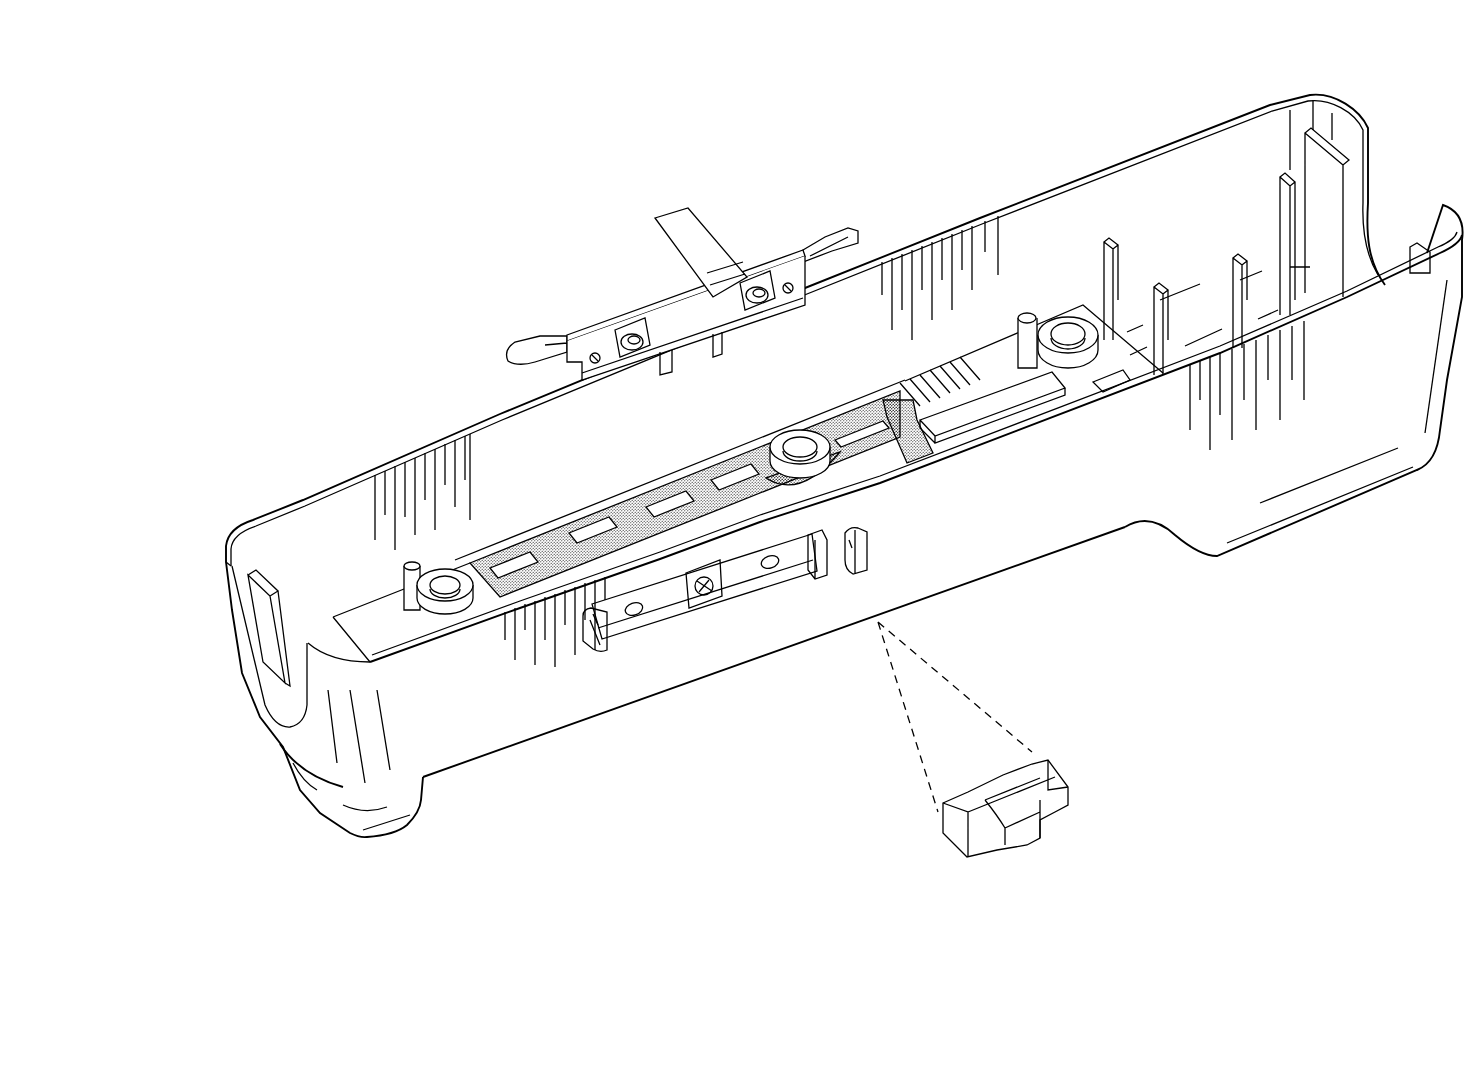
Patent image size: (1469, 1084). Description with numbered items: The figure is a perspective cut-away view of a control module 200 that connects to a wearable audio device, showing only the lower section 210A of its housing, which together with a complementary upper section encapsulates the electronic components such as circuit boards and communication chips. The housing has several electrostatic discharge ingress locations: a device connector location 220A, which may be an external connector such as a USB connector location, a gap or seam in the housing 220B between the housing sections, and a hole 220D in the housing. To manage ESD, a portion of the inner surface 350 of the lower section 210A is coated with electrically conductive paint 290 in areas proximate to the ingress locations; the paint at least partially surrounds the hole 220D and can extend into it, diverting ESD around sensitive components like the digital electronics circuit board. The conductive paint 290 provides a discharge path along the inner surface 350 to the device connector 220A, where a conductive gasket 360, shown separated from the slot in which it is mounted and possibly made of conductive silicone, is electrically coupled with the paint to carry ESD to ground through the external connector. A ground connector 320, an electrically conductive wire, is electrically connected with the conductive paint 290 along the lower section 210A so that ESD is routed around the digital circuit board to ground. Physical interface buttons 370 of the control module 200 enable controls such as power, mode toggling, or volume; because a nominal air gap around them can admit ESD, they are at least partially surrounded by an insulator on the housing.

The control module 200 is at (430, 170).
The lower section of the housing 210A is at (1017, 598).
The device connector location 220A is at (858, 650).
The gap in the housing 220B is at (377, 447).
The hole in the housing 220D is at (771, 578).
The electrically conductive paint 290 is at (886, 404).
The ground connector 320 is at (677, 190).
The inner surface of the housing 350 is at (1004, 320).
The conductive gasket 360 is at (938, 848).
The physical interface buttons 370 is at (754, 243).